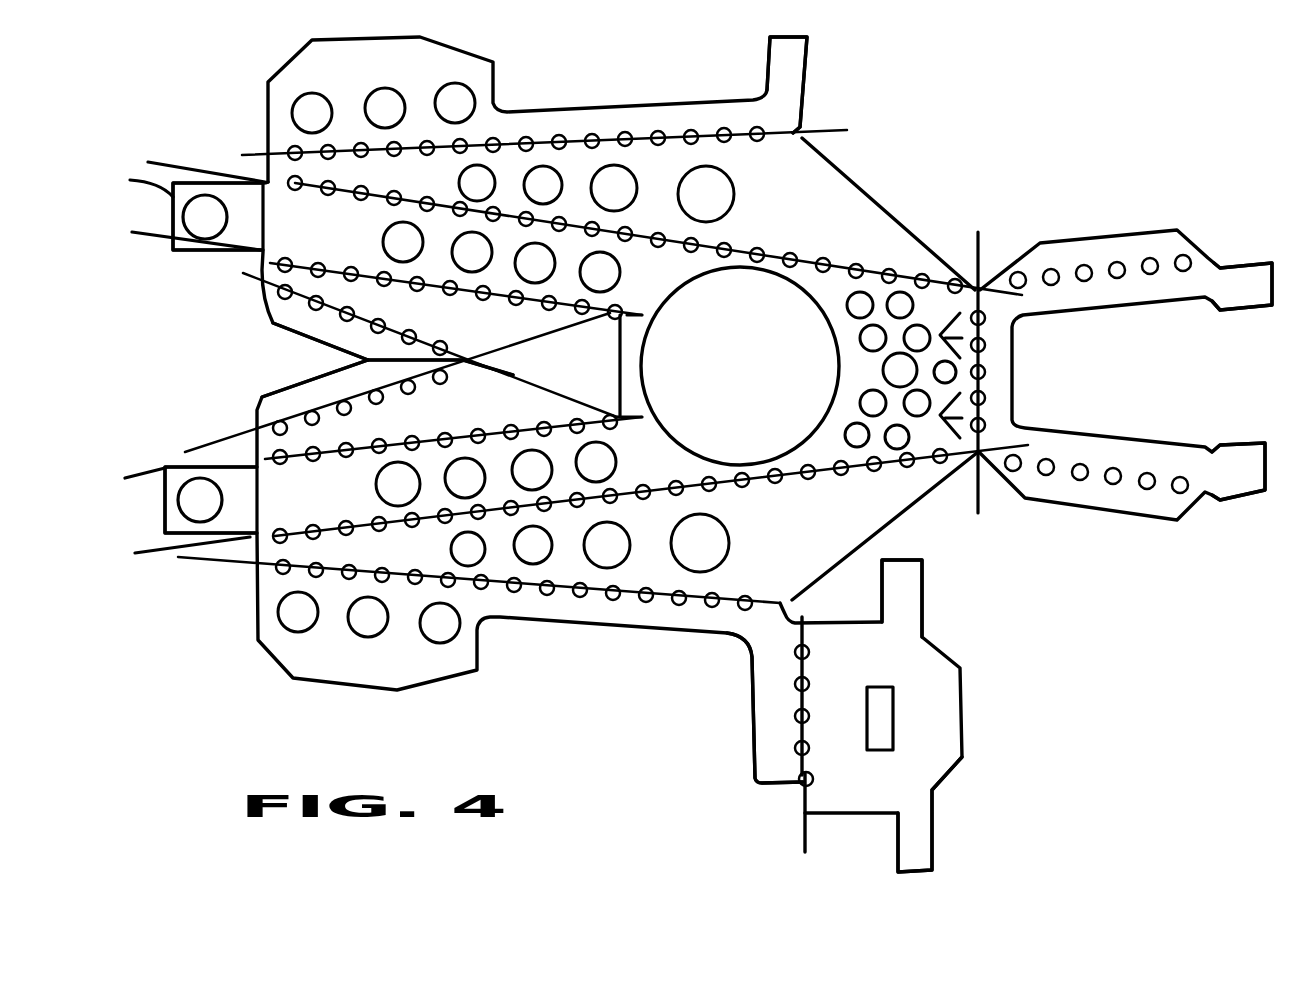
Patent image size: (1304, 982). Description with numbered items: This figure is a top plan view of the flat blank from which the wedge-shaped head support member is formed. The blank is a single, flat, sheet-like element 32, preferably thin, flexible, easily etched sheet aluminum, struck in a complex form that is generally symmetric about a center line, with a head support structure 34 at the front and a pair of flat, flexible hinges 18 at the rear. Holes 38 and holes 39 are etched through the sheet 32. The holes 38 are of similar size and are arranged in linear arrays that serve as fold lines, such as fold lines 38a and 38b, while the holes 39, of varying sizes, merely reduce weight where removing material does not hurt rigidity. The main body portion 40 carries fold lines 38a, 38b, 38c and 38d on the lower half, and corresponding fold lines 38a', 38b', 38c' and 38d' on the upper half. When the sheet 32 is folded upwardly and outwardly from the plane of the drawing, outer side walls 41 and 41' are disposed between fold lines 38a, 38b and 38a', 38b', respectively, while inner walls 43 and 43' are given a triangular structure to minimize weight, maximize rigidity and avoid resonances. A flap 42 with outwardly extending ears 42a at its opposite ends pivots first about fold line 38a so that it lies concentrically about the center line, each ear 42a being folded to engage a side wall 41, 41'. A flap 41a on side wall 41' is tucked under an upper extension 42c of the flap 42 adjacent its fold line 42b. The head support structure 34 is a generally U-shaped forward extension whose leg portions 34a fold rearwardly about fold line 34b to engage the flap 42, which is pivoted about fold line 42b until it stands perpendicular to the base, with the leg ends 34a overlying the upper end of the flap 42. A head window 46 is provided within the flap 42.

The flat flexible hinge 18 is at (173, 196).
The sheet-like element 32 is at (947, 165).
The head support structure 34 is at (1117, 230).
The leg portion 34a is at (1258, 280).
The fold line 34b is at (982, 242).
The hole 38 is at (492, 520).
The fold line 38a is at (456, 584).
The fold line 38b is at (650, 475).
The fold line 38c is at (453, 468).
The fold line 38d is at (391, 382).
The fold line 38a' is at (589, 123).
The fold line 38b' is at (655, 235).
The fold line 38c' is at (456, 260).
The fold line 38d' is at (397, 345).
The hole 39 is at (703, 530).
The main body portion 40 is at (905, 512).
The side wall 41 is at (831, 596).
The side wall 41' is at (888, 214).
The flap 41a is at (795, 60).
The flap 42 is at (948, 690).
The ear 42a is at (912, 567).
The fold line 42b is at (808, 843).
The upper extension 42c is at (767, 723).
The inner wall 43 is at (452, 366).
The inner wall 43' is at (372, 349).
The head window 46 is at (887, 715).